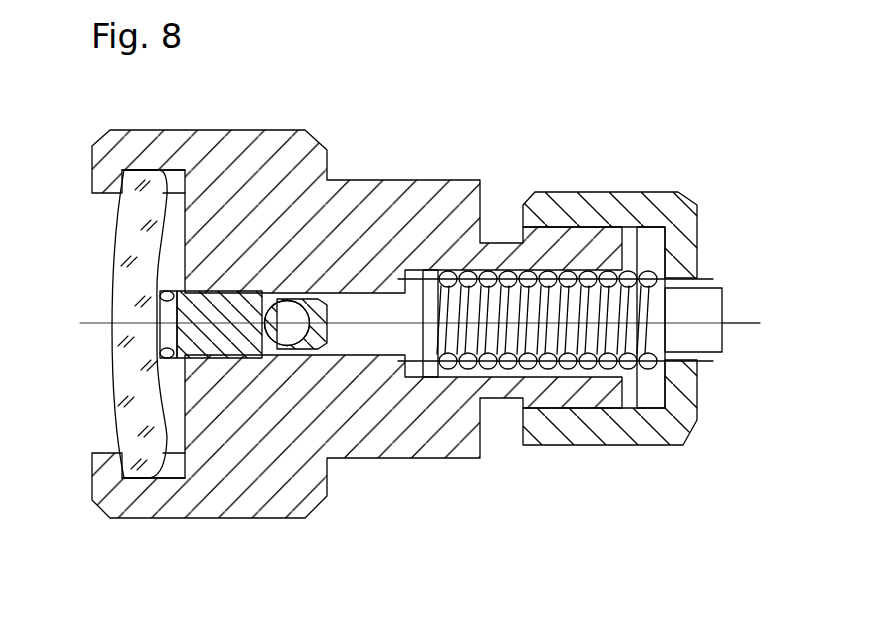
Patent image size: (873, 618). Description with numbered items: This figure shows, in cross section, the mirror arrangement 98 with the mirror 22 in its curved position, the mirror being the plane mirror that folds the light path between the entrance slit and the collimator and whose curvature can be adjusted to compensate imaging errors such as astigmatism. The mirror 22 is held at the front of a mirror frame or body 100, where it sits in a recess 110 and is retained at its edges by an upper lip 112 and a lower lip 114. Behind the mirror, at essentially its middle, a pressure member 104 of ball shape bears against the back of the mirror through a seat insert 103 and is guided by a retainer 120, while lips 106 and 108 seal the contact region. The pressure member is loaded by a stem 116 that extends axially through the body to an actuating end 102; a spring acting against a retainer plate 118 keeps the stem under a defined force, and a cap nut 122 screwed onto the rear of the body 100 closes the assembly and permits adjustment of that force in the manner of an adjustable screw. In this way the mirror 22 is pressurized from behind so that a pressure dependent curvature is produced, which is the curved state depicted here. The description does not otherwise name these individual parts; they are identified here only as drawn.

The valve assembly 98 is at (628, 88).
The valve body 100 is at (297, 195).
The actuating end of stem 102 is at (737, 304).
The valve seat insert 103 is at (205, 360).
The ball 104 is at (243, 330).
The upper seal lip 106 is at (165, 297).
The lower seal lip 108 is at (167, 352).
The lens recess 110 is at (125, 248).
The upper retaining lip 112 is at (112, 138).
The lower retaining lip 114 is at (100, 483).
The valve stem 116 is at (710, 330).
The spring retainer plate 118 is at (662, 272).
The ball retainer 120 is at (287, 300).
The cap nut 122 is at (587, 430).
The plane mirror 22 is at (127, 250).